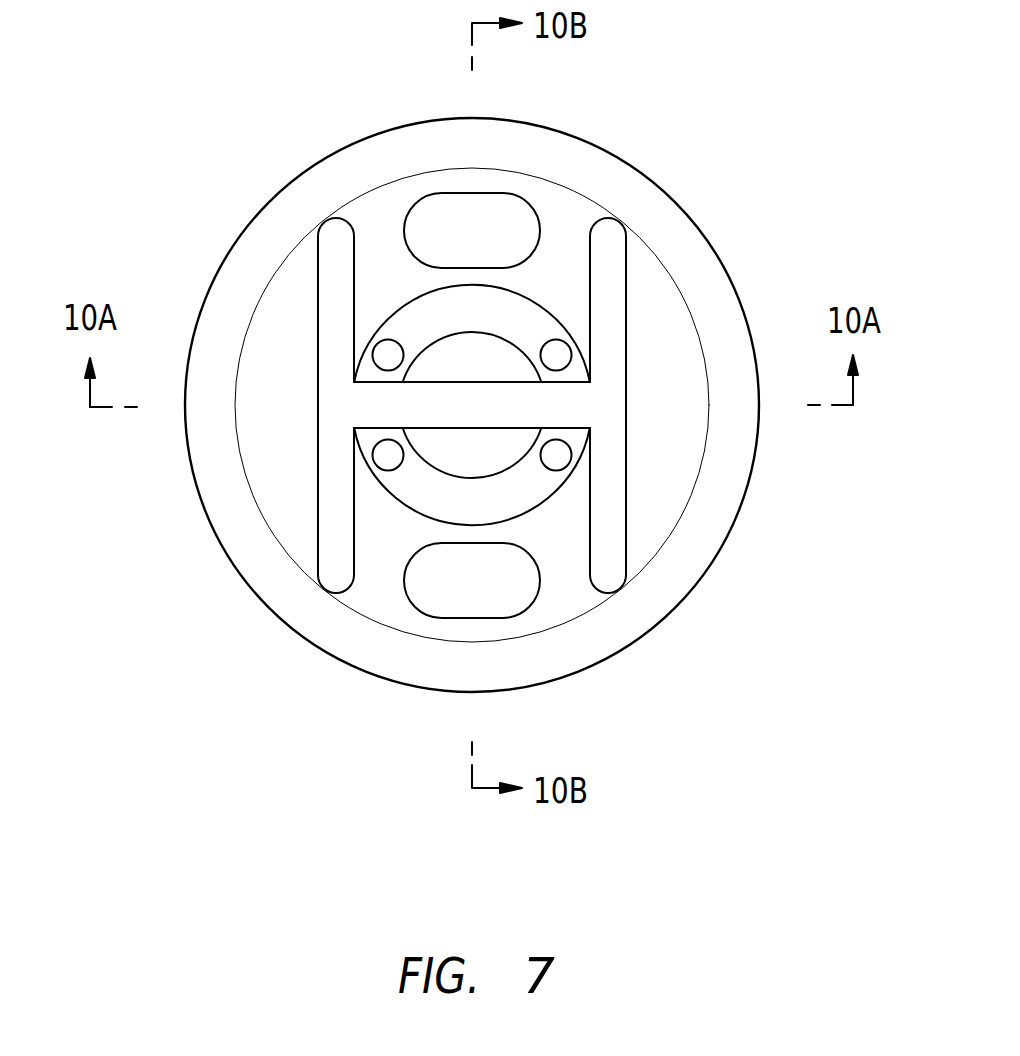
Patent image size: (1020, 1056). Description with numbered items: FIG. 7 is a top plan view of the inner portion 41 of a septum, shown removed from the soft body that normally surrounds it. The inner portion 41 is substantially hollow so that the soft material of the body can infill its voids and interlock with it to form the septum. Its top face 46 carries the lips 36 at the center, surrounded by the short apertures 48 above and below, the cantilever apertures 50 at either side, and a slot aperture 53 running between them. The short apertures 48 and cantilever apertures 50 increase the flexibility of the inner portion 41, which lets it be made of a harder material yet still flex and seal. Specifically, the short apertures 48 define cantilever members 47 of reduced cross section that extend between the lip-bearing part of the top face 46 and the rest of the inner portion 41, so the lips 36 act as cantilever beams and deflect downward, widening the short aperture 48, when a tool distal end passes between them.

The lips 36 is at (462, 358).
The inner portion 41 is at (770, 158).
The top face 46 is at (697, 323).
The cantilever members 47 is at (550, 270).
The short apertures 48 is at (473, 230).
The cantilever apertures 50 is at (335, 407).
The slot aperture 53 is at (472, 405).